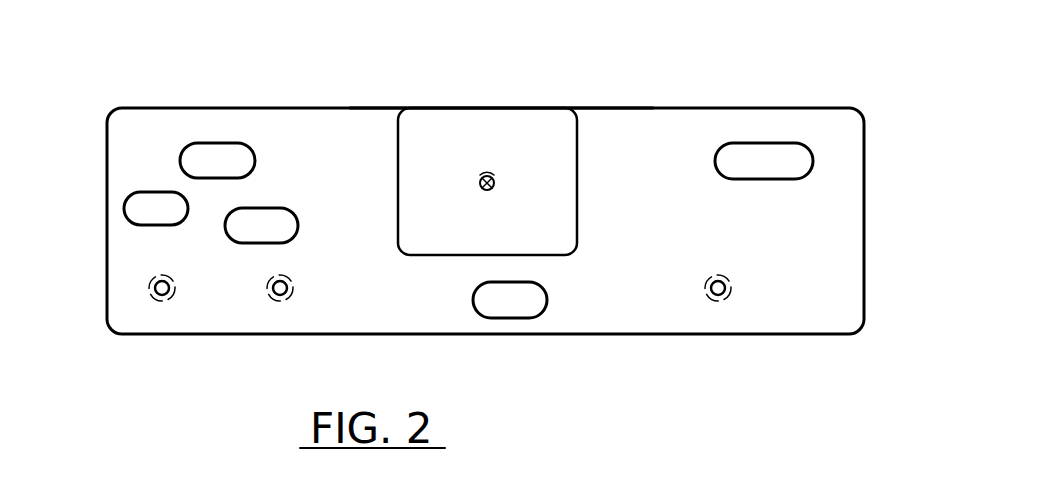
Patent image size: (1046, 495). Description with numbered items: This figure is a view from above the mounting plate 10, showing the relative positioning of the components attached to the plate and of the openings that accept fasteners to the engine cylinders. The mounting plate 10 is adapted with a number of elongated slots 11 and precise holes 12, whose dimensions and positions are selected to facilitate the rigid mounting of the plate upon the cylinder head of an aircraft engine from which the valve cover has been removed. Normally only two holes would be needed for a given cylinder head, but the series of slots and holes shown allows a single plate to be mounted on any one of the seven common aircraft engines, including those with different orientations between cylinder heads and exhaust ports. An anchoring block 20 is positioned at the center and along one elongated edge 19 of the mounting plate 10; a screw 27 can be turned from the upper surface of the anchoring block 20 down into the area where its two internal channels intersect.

The mounting plate 10 is at (467, 249).
The elongated slots 11 is at (252, 208).
The precise holes 12 is at (475, 331).
The elongated edge 19 is at (501, 77).
The anchoring block 20 is at (447, 240).
The screw 27 is at (496, 183).